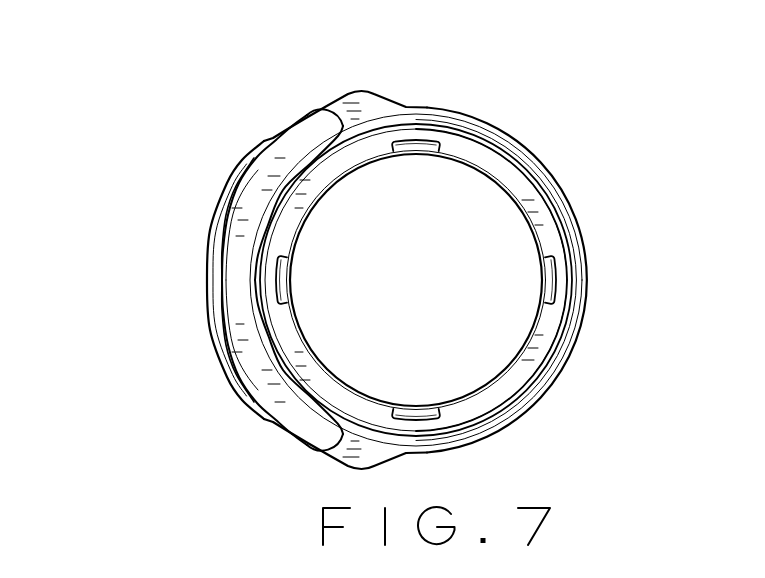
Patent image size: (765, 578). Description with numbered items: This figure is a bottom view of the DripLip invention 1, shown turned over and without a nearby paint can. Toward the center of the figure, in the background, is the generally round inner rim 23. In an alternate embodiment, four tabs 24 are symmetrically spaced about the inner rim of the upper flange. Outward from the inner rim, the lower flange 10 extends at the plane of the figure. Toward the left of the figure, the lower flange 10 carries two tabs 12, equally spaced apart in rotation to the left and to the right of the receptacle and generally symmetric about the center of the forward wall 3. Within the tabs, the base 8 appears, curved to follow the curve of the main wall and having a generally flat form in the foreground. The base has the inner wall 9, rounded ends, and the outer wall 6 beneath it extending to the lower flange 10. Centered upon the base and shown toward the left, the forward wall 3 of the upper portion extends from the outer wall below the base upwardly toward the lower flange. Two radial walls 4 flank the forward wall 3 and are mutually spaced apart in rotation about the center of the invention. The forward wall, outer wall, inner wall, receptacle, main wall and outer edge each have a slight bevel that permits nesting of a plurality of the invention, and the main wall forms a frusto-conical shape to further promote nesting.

The DripLip 1 is at (152, 146).
The forward wall 3 is at (233, 386).
The radial walls 4 is at (263, 138).
The outer wall 6 is at (309, 126).
The base 8 is at (324, 436).
The inner wall 9 is at (255, 246).
The lower flange 10 is at (470, 148).
The tabs 12 is at (358, 95).
The inner rim 23 is at (516, 368).
The tabs 24 is at (417, 142).